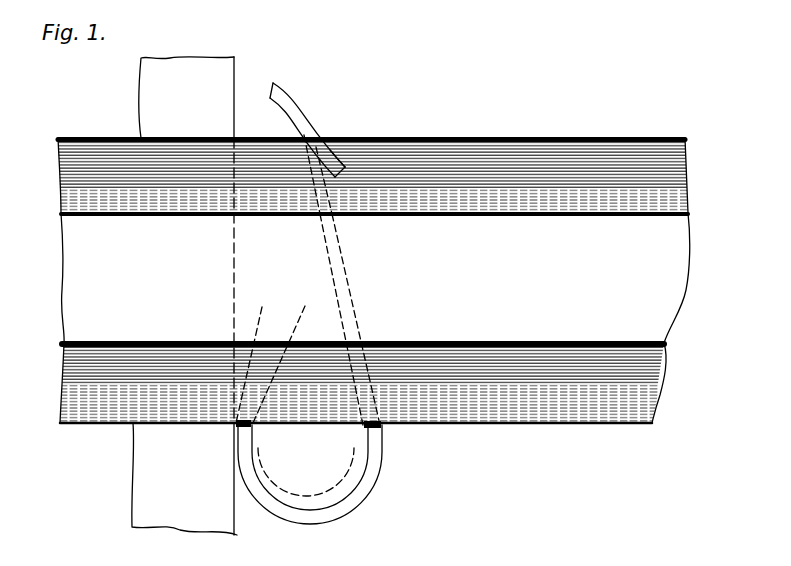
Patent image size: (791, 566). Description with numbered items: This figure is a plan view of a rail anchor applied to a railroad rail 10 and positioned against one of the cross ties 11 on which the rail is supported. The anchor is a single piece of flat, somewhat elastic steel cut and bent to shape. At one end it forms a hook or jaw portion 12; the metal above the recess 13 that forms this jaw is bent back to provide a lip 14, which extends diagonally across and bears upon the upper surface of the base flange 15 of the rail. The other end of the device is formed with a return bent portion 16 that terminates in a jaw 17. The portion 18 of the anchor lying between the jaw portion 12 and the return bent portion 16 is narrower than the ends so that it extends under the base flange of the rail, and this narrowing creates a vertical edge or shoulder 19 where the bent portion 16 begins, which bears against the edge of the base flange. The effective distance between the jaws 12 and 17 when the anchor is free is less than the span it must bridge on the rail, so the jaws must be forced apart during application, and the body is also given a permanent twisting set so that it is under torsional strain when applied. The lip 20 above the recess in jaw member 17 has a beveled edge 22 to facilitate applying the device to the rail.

The railroad rail 10 is at (412, 233).
The cross tie 11 is at (223, 80).
The hook or jaw portion 12 is at (310, 128).
The recess 13 is at (301, 156).
The lip 14 is at (329, 137).
The base flange 15 is at (558, 160).
The return bent portion 16 is at (384, 457).
The jaw 17 is at (198, 498).
The intervening portion 18 is at (356, 312).
The vertical edge or shoulder 19 is at (372, 426).
The lip 20 is at (244, 434).
The beveled edge 22 is at (112, 452).